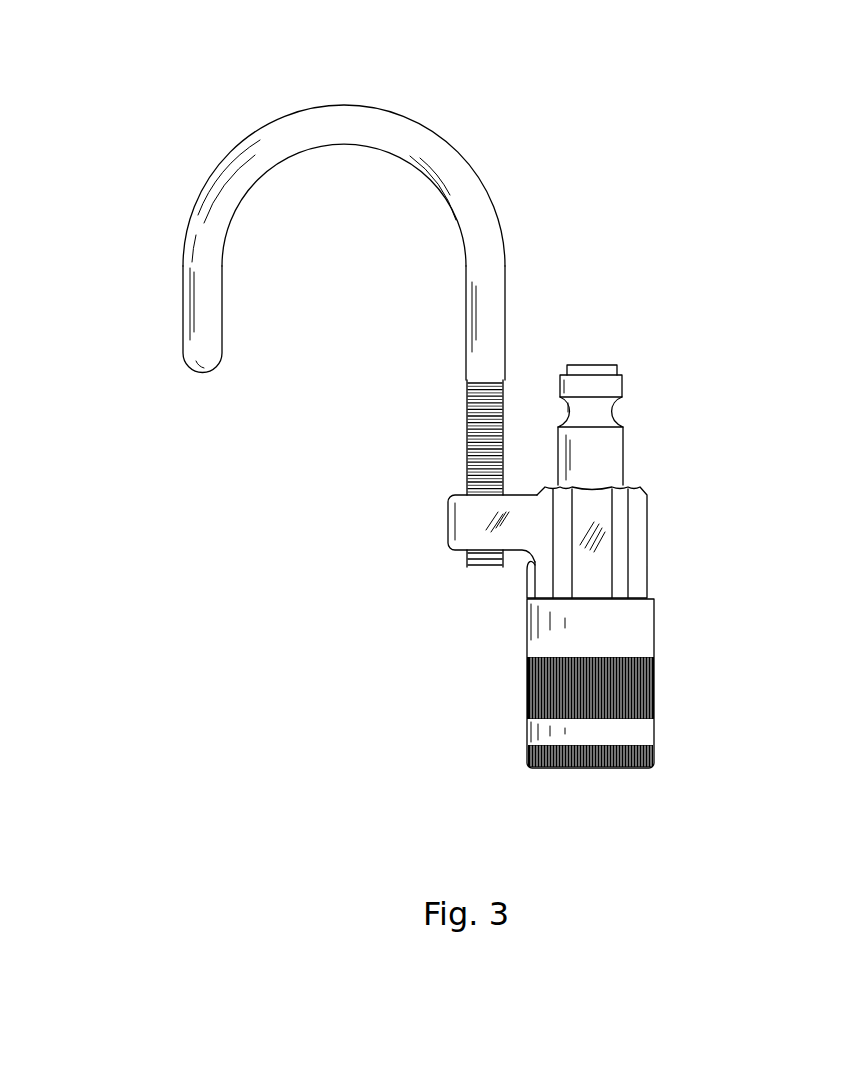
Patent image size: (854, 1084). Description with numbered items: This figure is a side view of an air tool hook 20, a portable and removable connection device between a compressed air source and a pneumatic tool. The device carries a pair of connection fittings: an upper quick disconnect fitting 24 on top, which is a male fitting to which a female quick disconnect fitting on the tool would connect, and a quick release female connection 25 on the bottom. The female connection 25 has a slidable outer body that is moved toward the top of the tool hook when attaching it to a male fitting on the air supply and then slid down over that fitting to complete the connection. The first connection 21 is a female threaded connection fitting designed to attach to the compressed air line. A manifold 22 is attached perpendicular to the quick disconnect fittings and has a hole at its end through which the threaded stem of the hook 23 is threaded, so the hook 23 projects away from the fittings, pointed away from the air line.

The air tool hook 20 is at (152, 107).
The first connection 21 is at (647, 548).
The manifold 22 is at (448, 525).
The hook 23 is at (414, 122).
The upper quick disconnect fitting 24 is at (592, 362).
The quick release female connection 25 is at (527, 757).